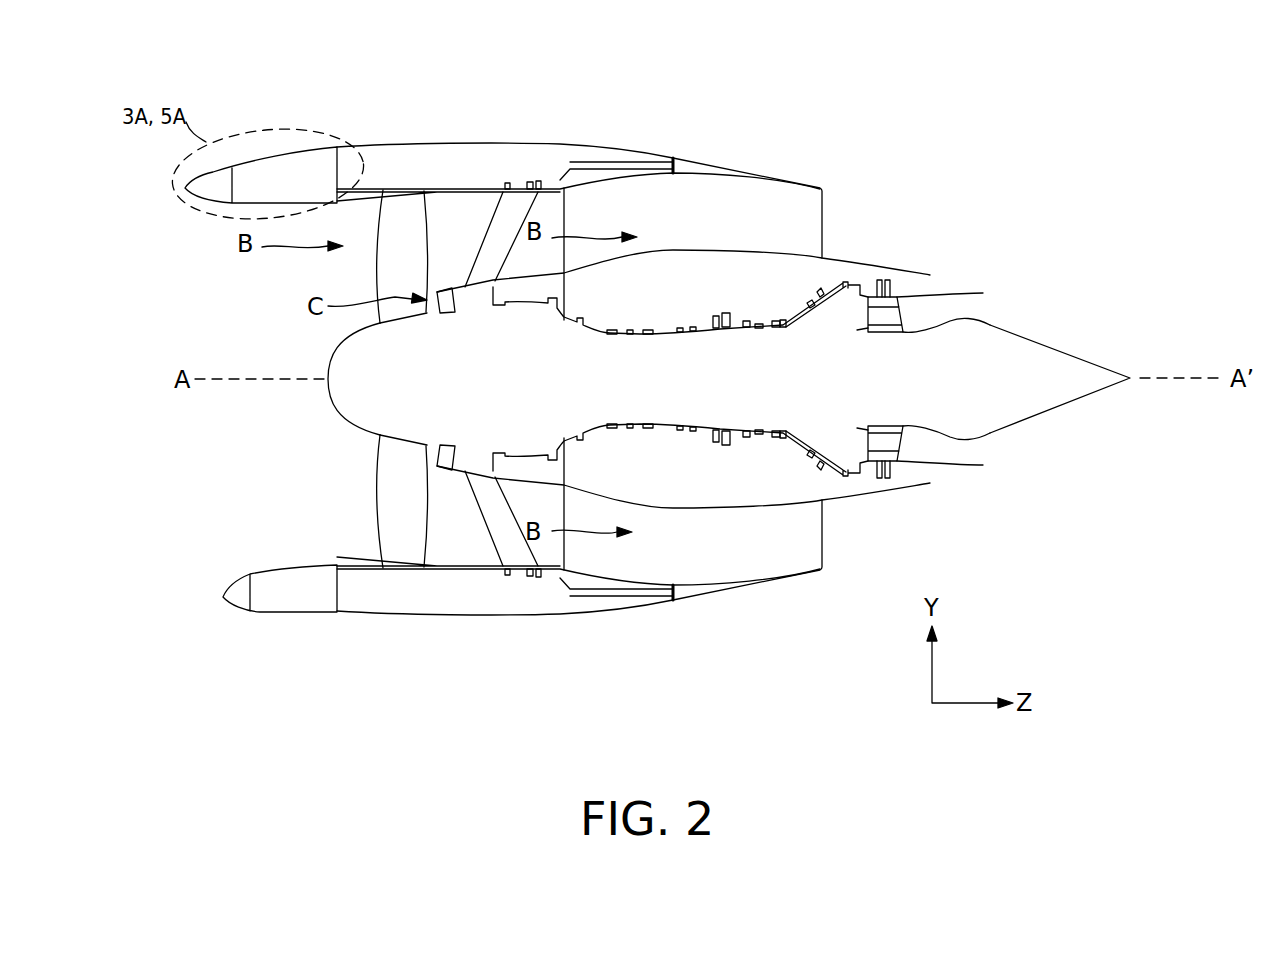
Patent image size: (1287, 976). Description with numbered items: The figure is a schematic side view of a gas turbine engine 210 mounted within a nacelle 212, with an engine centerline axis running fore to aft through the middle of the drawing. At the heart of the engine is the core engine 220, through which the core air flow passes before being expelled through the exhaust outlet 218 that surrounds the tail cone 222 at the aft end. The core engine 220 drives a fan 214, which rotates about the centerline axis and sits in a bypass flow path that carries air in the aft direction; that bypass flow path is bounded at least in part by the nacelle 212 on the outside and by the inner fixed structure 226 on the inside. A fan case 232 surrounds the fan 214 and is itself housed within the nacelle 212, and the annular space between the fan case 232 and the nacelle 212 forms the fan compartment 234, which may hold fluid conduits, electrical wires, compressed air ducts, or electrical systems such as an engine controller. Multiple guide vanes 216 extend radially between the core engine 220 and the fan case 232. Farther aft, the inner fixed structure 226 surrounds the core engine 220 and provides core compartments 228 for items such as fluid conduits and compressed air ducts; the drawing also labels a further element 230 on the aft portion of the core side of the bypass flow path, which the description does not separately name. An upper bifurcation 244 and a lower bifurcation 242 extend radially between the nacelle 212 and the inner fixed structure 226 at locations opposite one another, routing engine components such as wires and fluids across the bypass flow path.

The gas turbine engine 210 is at (832, 100).
The nacelle 212 is at (371, 136).
The fan 214 is at (382, 490).
The guide vanes 216 is at (496, 243).
The exhaust outlet 218 is at (977, 309).
The core engine 220 is at (704, 316).
The tail cone 222 is at (1020, 411).
The inner fixed structure 226 is at (710, 246).
The core compartment 228 is at (722, 489).
The core cowl 230 is at (785, 472).
The fan case 232 is at (362, 574).
The fan compartment 234 is at (493, 609).
The lower bifurcation 242 is at (795, 560).
The upper bifurcation 244 is at (812, 205).